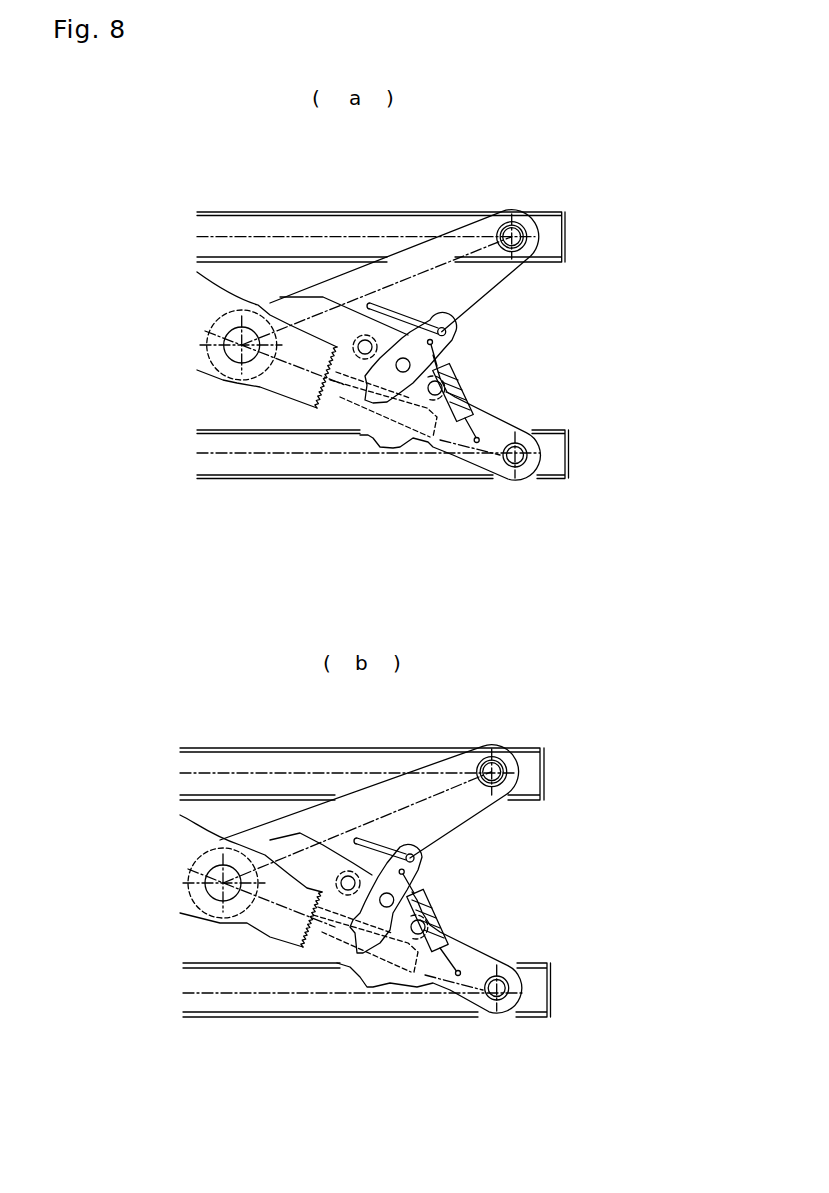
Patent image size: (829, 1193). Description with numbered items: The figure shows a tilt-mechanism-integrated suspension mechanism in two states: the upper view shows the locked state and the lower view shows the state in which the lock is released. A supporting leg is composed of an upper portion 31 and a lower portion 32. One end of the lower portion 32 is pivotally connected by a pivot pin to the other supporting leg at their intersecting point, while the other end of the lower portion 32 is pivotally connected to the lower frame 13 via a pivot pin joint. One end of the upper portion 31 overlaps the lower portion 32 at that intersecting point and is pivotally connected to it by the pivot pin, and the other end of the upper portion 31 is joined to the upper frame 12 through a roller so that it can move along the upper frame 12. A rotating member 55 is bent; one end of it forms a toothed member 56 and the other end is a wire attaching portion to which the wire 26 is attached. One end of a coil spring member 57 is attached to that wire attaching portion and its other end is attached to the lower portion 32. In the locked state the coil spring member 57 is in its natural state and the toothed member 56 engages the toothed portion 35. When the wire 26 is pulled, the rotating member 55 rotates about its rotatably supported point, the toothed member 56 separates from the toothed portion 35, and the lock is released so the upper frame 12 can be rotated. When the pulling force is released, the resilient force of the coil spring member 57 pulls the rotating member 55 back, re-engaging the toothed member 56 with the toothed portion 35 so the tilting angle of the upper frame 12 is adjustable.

The upper frame 12 is at (465, 210).
The lower frame 13 is at (550, 477).
The wire 26 is at (447, 325).
The upper portion 31 is at (210, 307).
The lower portion 32 is at (463, 447).
The toothed portion 35 is at (337, 357).
The rotating member 55 is at (452, 337).
The toothed member 56 is at (357, 393).
The coil spring member 57 is at (478, 405).